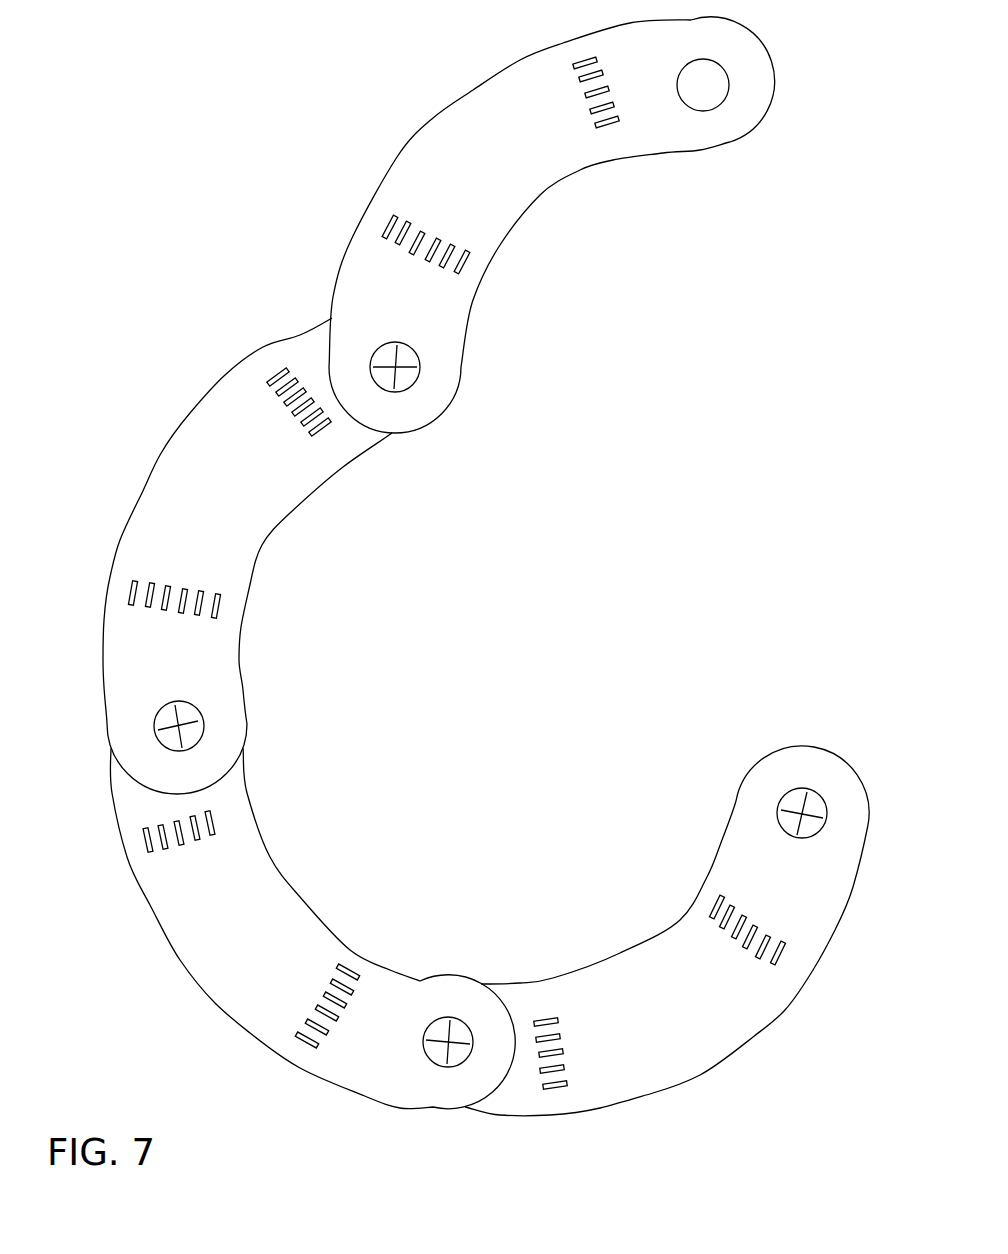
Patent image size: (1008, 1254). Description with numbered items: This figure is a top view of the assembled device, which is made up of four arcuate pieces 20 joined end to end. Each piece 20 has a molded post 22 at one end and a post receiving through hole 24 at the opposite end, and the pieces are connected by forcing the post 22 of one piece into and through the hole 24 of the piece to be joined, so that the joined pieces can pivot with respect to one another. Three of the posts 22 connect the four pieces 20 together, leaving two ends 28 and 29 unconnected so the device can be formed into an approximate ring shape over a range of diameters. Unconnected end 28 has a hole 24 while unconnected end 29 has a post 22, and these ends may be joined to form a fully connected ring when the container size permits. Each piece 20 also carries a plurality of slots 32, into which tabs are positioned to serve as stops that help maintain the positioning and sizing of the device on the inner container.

The arcuate piece 20 is at (573, 167).
The molded post 22 is at (405, 377).
The post receiving through hole 24 is at (700, 98).
The unconnected end 28 is at (767, 116).
The unconnected end 29 is at (813, 750).
The slots 32 is at (558, 1020).